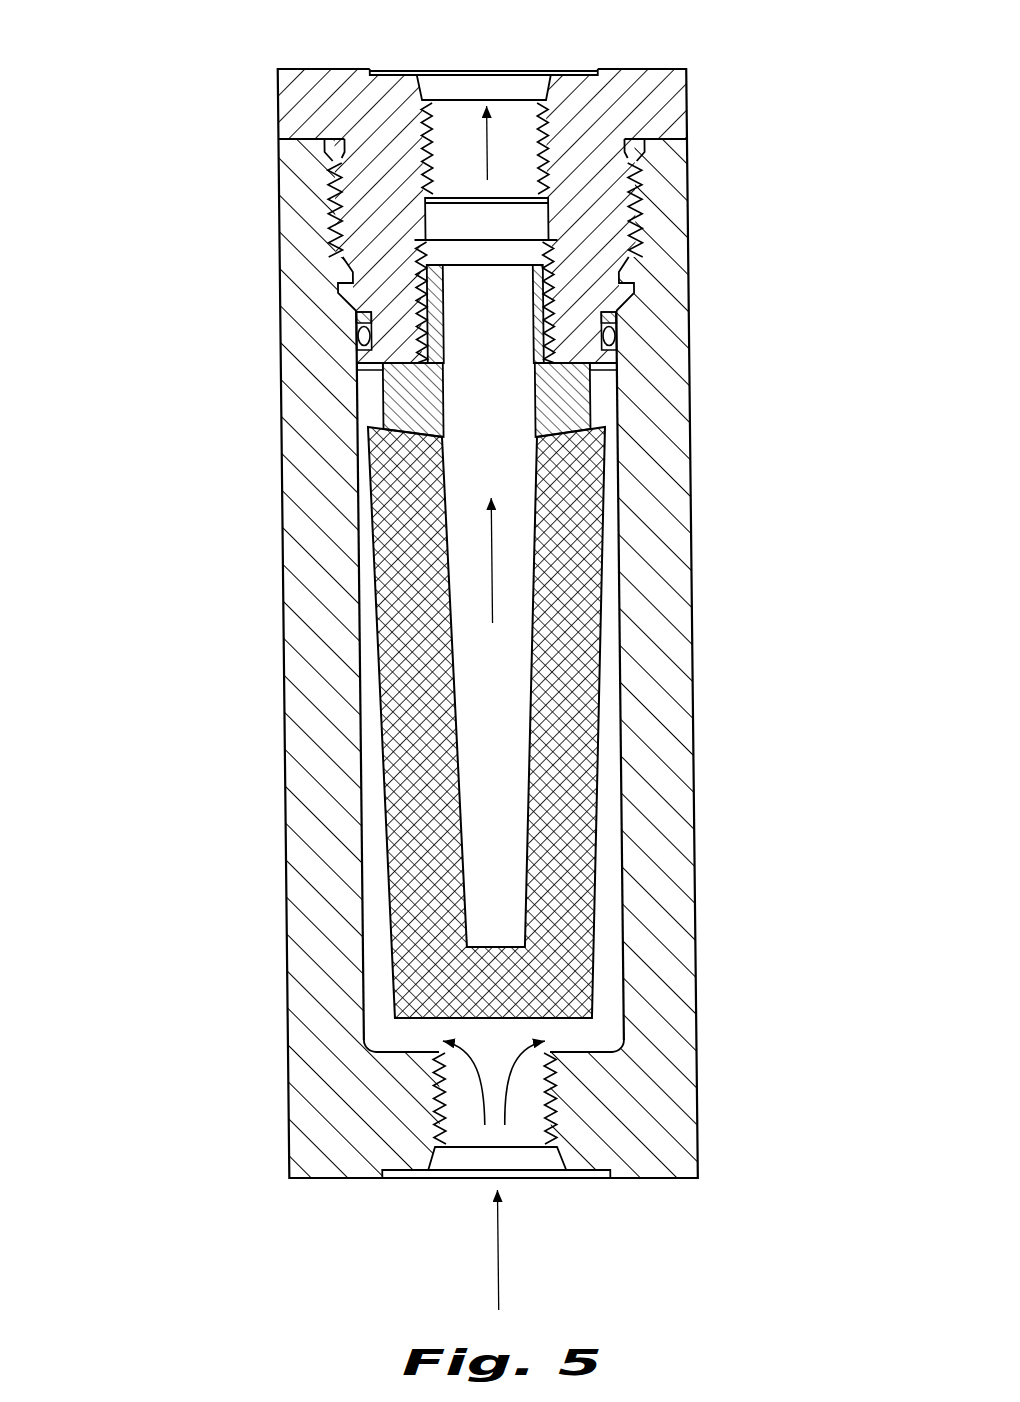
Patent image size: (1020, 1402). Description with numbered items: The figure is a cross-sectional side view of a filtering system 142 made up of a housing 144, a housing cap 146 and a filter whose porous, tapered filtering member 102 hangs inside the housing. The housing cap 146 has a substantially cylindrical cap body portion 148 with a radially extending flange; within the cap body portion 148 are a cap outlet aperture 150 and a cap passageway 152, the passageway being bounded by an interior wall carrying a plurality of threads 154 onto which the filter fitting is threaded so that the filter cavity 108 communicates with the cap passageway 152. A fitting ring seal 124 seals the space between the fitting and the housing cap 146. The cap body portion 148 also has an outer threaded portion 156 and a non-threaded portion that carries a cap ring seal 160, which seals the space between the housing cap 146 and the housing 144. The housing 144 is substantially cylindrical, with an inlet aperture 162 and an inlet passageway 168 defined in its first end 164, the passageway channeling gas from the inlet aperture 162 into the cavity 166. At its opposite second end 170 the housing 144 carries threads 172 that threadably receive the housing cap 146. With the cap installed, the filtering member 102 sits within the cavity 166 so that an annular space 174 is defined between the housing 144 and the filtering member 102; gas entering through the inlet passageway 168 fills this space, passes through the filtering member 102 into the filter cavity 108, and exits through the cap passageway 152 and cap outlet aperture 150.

The filtering system 142 is at (116, 400).
The housing 144 is at (678, 987).
The housing cap 146 is at (668, 108).
The cap body portion 148 is at (358, 237).
The cap outlet aperture 150 is at (510, 68).
The cap passageway 152 is at (443, 147).
The threads 154 is at (545, 252).
The outer threaded portion 156 is at (640, 168).
The cap ring seal 160 is at (607, 335).
The fitting ring seal 124 is at (595, 354).
The annular space 174 is at (598, 412).
The cavity 166 is at (375, 840).
The filtering member 102 is at (583, 493).
The filter cavity 108 is at (497, 645).
The inlet passageway 168 is at (530, 1082).
The first end 164 is at (292, 1200).
The inlet aperture 162 is at (537, 1180).
The second end 170 is at (258, 90).
The threads 172 is at (328, 208).